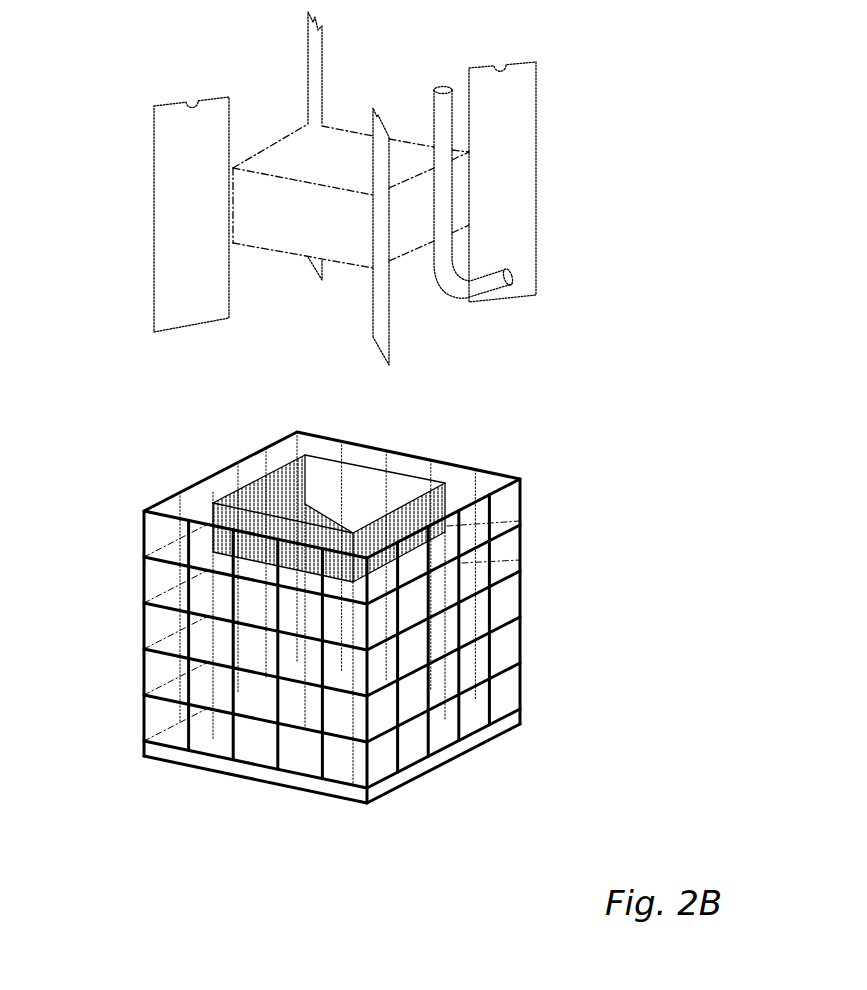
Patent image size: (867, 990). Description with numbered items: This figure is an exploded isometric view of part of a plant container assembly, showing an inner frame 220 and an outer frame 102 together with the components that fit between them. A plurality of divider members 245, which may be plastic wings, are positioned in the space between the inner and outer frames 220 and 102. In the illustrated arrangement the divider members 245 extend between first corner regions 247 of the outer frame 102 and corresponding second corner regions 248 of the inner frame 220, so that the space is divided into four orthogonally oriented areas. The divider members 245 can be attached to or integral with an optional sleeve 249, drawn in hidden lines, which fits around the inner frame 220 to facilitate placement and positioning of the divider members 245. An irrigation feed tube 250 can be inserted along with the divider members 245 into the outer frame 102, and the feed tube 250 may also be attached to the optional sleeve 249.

The outer frame 102 is at (353, 590).
The inner frame 220 is at (433, 713).
The divider members 245 is at (317, 52).
The first corner regions 247 is at (285, 423).
The second corner regions 248 is at (292, 451).
The sleeve 249 is at (277, 143).
The irrigation feed tube 250 is at (445, 85).